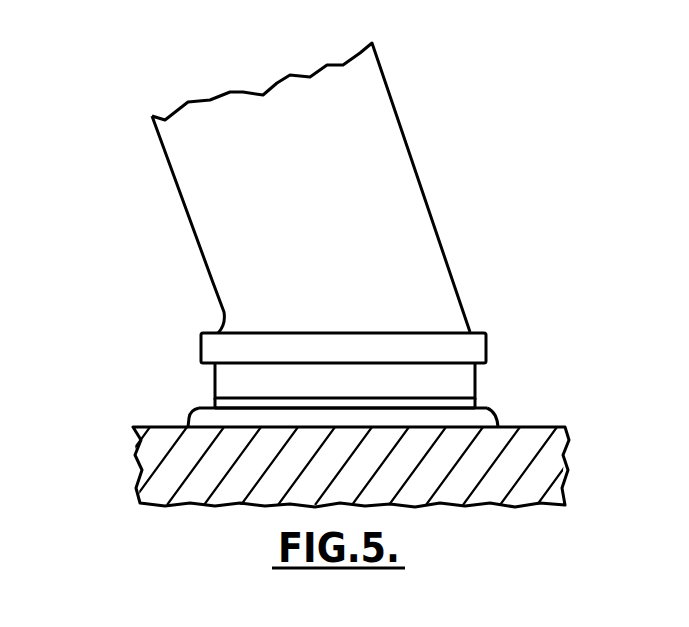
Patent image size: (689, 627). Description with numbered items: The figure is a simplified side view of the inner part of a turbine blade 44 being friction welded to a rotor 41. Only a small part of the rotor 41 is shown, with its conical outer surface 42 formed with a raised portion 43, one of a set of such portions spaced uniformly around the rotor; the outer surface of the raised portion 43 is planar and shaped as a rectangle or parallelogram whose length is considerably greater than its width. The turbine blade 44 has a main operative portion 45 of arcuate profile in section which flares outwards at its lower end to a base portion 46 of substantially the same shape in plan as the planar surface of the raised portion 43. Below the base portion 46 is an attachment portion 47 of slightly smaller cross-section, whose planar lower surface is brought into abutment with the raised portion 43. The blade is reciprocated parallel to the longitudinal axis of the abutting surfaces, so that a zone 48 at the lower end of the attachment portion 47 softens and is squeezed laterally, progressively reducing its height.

The rotor 41 is at (168, 457).
The conical outer surface 42 is at (167, 425).
The raised portion 43 is at (480, 418).
The turbine blade 44 is at (292, 188).
The main operative portion 45 is at (218, 184).
The base portion 46 is at (218, 348).
The attachment portion 47 is at (455, 380).
The zone 48 is at (215, 405).